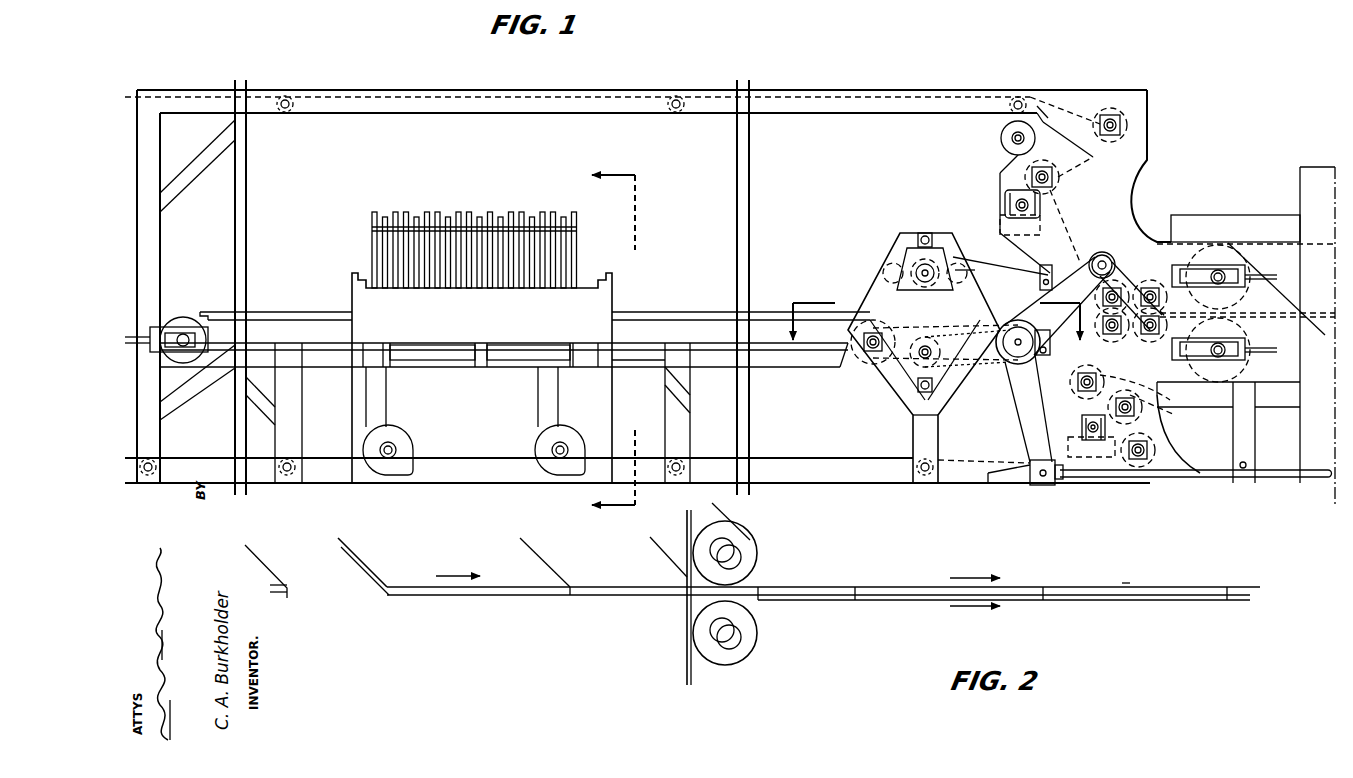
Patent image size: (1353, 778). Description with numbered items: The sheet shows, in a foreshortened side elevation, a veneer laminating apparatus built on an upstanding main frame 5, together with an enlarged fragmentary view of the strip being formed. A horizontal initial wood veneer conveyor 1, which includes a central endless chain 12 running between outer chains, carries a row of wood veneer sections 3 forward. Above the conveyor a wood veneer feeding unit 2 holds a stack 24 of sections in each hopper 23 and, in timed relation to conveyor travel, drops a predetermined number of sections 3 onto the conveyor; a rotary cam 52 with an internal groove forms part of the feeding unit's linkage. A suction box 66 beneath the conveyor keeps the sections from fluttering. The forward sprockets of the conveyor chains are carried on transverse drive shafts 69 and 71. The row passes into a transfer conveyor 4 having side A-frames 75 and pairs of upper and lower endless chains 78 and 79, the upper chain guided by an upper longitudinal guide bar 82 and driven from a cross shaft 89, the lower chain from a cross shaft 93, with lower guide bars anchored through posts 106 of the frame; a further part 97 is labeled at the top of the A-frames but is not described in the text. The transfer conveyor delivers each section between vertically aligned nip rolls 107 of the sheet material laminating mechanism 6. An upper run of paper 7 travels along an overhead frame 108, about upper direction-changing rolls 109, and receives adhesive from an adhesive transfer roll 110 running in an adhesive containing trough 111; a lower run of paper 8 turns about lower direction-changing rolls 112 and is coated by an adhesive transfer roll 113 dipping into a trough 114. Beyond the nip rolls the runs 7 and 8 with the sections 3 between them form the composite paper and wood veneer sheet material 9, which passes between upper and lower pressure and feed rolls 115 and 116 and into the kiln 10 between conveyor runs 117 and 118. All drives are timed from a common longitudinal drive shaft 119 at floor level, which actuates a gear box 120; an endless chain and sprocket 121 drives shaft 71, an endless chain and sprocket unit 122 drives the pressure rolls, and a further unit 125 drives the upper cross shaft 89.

In FIG. 1, the wood veneer conveyor 1 is at (680, 312).
In FIG. 1, the wood veneer feeding unit 2 is at (465, 315).
In FIG. 1, the wood veneer sections 3 is at (613, 342).
In FIG. 2, the wood veneer sections 3 is at (580, 596).
In FIG. 1, the transfer conveyor 4 is at (961, 230).
In FIG. 1, the main frame 5 is at (308, 312).
In FIG. 1, the sheet material laminating mechanism 6 is at (1152, 208).
In FIG. 1, the upper run of paper 7 is at (370, 92).
In FIG. 2, the upper run of paper 7 is at (838, 587).
In FIG. 1, the lower run of paper 8 is at (318, 458).
In FIG. 2, the lower run of paper 8 is at (838, 601).
In FIG. 2, the composite paper and wood veneer sheet material 9 is at (1124, 582).
In FIG. 1, the kiln 10 is at (1298, 176).
In FIG. 1, the central endless chain 12 is at (512, 375).
In FIG. 1, the hopper 23 is at (380, 212).
In FIG. 1, the stack of wood veneer sections 24 is at (372, 240).
In FIG. 1, the rotary cam 52 is at (405, 432).
In FIG. 1, the suction box 66 is at (645, 365).
In FIG. 1, the transverse drive shaft 69 is at (866, 346).
In FIG. 1, the transverse drive shaft 71 is at (1012, 350).
In FIG. 1, the side A-frames 75 is at (900, 245).
In FIG. 1, the upper endless chain 78 is at (1002, 310).
In FIG. 1, the lower endless chain 79 is at (933, 385).
In FIG. 1, the upper longitudinal guide bar 82 is at (1028, 310).
In FIG. 1, the cross shaft 89 is at (915, 270).
In FIG. 1, the cross shaft 93 is at (920, 358).
In FIG. 1, the pivot bolt 97 is at (925, 233).
In FIG. 1, the posts 106 is at (913, 440).
In FIG. 1, the nip rolls 107 is at (1118, 340).
In FIG. 2, the nip rolls 107 is at (735, 612).
In FIG. 1, the overhead frame 108 is at (855, 105).
In FIG. 1, the upper direction-changing rolls 109 is at (1110, 142).
In FIG. 1, the adhesive transfer roll 110 is at (1040, 205).
In FIG. 1, the adhesive containing trough 111 is at (1003, 235).
In FIG. 1, the lower direction-changing rolls 112 is at (1160, 405).
In FIG. 1, the adhesive transfer roll 113 is at (1082, 427).
In FIG. 1, the adhesive containing trough 114 is at (1090, 458).
In FIG. 1, the upper pressure and feed rolls 115 is at (1128, 283).
In FIG. 1, the lower pressure and feed rolls 116 is at (1160, 370).
In FIG. 1, the upper run of endless foraminous conveyor 117 is at (1305, 307).
In FIG. 1, the lower run of endless foraminous conveyor 118 is at (1305, 318).
In FIG. 1, the longitudinal drive shaft 119 is at (1280, 478).
In FIG. 1, the gear box 120 is at (1035, 487).
In FIG. 1, the endless chain and sprocket 121 is at (1020, 410).
In FIG. 1, the endless chain and sprocket unit 122 is at (1104, 254).
In FIG. 1, the endless chain and sprocket unit 125 is at (885, 282).